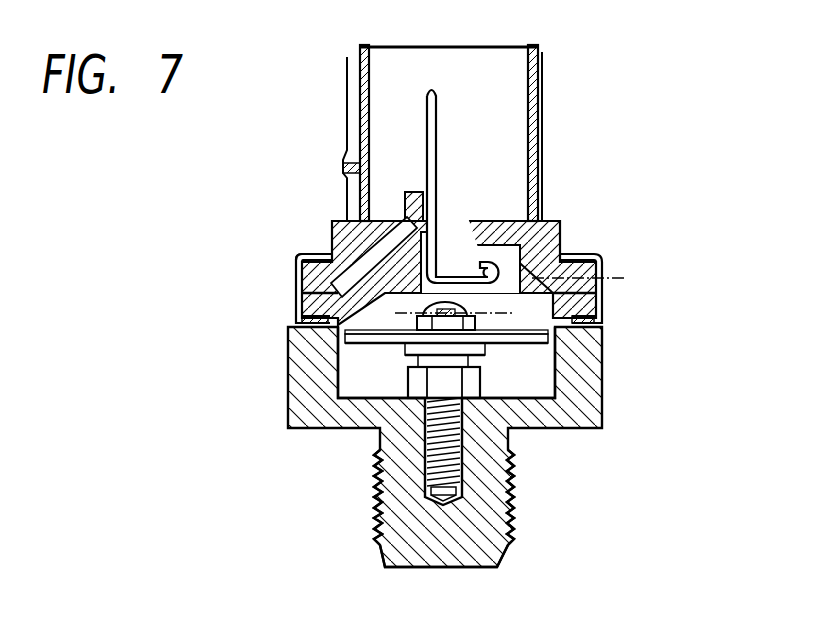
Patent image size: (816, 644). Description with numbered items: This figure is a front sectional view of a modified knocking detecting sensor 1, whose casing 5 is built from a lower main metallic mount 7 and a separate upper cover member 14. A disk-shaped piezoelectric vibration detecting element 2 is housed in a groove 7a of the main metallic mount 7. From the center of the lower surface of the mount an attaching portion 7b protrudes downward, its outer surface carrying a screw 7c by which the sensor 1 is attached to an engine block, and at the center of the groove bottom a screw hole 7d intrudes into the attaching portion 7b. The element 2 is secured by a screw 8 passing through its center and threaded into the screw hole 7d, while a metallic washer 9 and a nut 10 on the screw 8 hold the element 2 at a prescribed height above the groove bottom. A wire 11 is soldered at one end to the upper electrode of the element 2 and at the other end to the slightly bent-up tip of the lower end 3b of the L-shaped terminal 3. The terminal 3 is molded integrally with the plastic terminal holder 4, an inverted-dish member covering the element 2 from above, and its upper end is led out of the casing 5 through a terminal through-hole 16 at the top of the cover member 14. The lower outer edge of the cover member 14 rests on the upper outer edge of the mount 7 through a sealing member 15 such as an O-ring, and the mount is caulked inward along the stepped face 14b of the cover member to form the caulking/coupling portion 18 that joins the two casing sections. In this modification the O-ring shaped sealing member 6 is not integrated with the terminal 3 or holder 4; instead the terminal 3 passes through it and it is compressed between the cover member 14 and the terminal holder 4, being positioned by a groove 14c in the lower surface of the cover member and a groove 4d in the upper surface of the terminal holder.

The knocking detecting sensor 1 is at (610, 78).
The vibration detecting element 2 is at (545, 340).
The terminal 3 is at (436, 118).
The lower end of the terminal 3b is at (538, 222).
The terminal holder 4 is at (332, 285).
The groove 4d is at (340, 293).
The casing 5 is at (612, 238).
The sealing member 6 is at (462, 245).
The main metallic mount 7 is at (604, 422).
The groove 7a is at (340, 388).
The attaching portion 7b is at (495, 556).
The screw 7c is at (513, 518).
The screw hole 7d is at (383, 512).
The screw 8 is at (417, 320).
The metallic washer 9 is at (408, 375).
The nut 10 is at (405, 348).
The wire 11 is at (625, 278).
The cover member 14 is at (296, 268).
The stepped face 14b is at (587, 255).
The groove 14c is at (390, 226).
The sealing member 15 is at (335, 318).
The terminal through-hole 16 is at (430, 215).
The caulking/coupling portion 18 is at (308, 252).